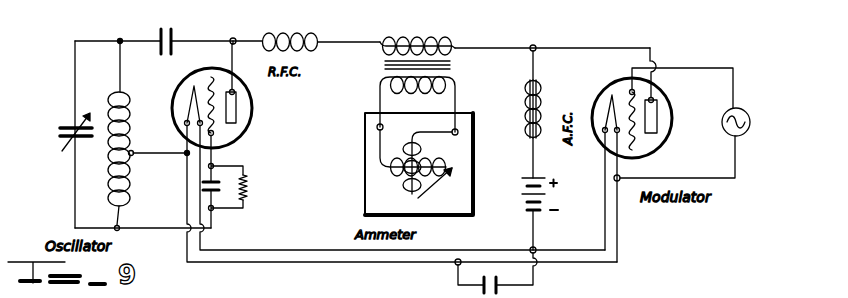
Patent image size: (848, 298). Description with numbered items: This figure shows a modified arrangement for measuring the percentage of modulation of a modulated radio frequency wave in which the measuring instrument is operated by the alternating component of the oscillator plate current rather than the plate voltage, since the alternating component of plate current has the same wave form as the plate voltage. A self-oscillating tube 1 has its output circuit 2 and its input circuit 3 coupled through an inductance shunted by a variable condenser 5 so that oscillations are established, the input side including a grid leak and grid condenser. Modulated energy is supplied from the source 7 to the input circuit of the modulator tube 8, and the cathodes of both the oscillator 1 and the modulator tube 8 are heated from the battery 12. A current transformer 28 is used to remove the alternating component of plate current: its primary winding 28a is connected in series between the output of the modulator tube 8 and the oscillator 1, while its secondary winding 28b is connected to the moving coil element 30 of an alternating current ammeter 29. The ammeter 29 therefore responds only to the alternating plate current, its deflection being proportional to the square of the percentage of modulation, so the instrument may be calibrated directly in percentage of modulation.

The oscillating tube 1 is at (280, 106).
The output circuit 2 is at (153, 58).
The input circuit 3 is at (205, 202).
The variable condenser 5 is at (62, 118).
The source 7 is at (752, 132).
The modulator tube 8 is at (676, 116).
The battery 12 is at (456, 285).
The current transformer 28 is at (384, 67).
The primary winding 28a is at (382, 42).
The secondary winding 28b is at (466, 69).
The alternating current ammeter 29 is at (376, 182).
The moving coil element 30 is at (398, 145).